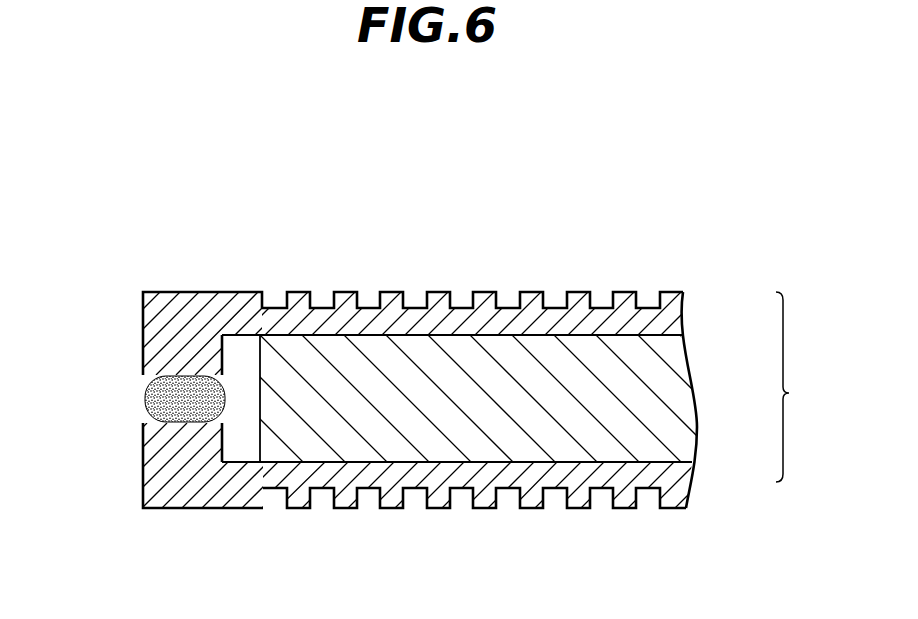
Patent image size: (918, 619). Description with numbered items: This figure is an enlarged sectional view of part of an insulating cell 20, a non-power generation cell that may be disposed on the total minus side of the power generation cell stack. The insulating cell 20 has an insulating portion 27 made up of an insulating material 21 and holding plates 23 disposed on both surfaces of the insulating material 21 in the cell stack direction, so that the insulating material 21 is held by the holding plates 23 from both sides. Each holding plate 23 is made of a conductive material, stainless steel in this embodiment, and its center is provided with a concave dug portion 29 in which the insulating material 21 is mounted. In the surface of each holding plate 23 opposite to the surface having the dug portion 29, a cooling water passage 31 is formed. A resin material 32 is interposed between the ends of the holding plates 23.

The insulating cell 20 is at (710, 214).
The insulating material 21 is at (678, 430).
The holding plate 23 is at (667, 325).
The insulating portion 27 is at (542, 400).
The dug portion 29 is at (245, 337).
The cooling water passage 31 is at (555, 308).
The resin material 32 is at (146, 402).